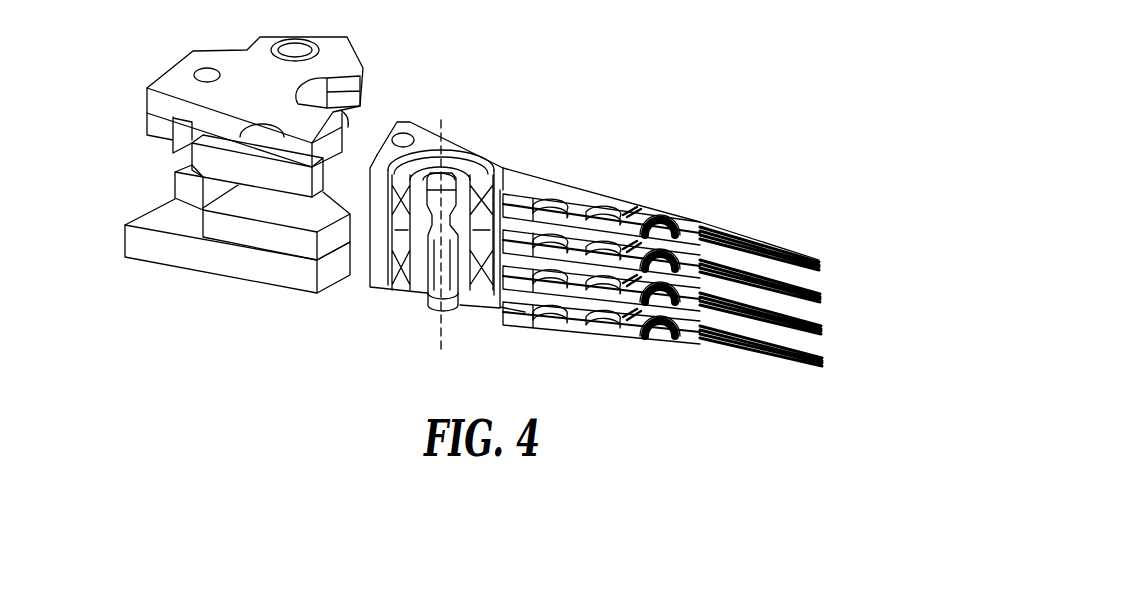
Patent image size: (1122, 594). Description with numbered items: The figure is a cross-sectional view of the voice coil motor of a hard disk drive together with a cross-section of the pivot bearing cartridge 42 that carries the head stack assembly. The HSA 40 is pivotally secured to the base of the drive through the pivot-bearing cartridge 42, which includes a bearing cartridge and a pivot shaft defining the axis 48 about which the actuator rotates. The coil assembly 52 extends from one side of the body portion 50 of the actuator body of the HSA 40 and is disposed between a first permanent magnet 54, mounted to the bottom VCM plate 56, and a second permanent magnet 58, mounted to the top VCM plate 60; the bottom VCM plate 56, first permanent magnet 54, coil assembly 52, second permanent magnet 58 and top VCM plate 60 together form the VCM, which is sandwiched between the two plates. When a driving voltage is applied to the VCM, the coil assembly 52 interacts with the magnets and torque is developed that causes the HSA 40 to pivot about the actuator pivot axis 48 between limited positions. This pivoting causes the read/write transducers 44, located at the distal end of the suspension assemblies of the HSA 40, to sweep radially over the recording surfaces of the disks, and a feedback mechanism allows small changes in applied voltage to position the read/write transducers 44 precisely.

The HSA 40 is at (662, 233).
The pivot-bearing cartridge 42 is at (443, 306).
The read/write transducer 44 is at (788, 298).
The axis 48 is at (440, 137).
The body portion 50 is at (412, 128).
The coil assembly 52 is at (180, 193).
The first permanent magnet 54 is at (263, 238).
The bottom VCM plate 56 is at (182, 260).
The second permanent magnet 58 is at (210, 168).
The top VCM plate 60 is at (165, 82).